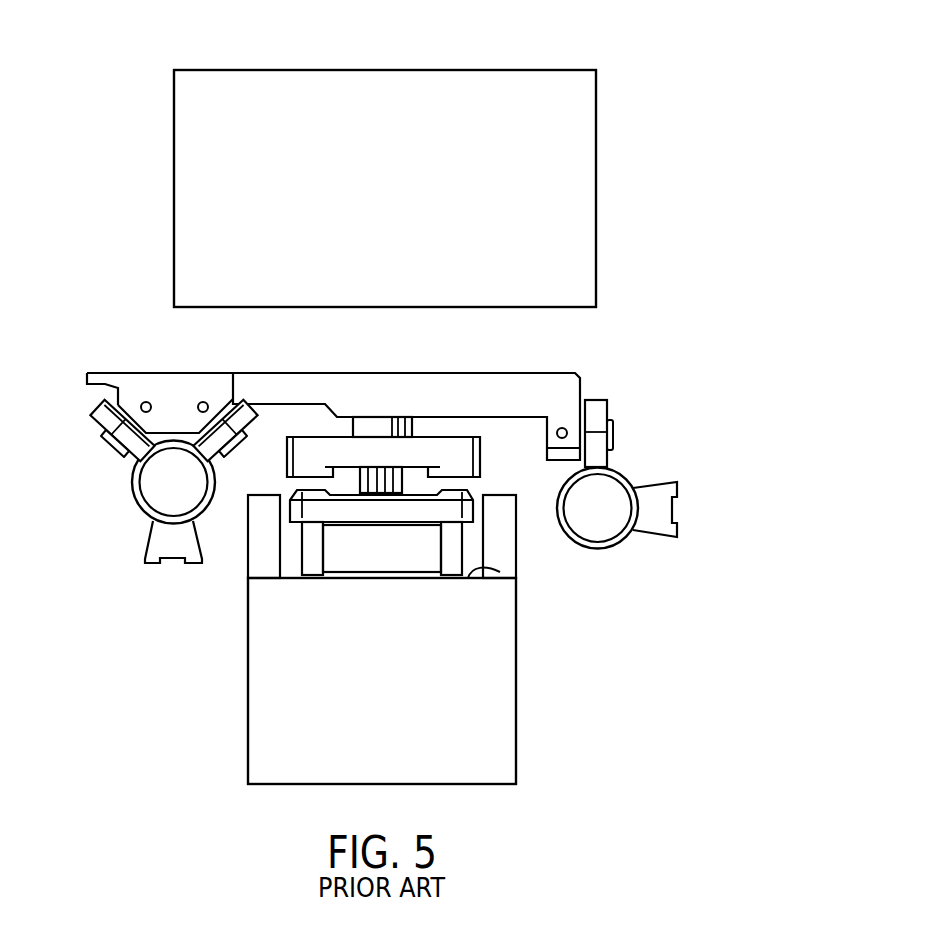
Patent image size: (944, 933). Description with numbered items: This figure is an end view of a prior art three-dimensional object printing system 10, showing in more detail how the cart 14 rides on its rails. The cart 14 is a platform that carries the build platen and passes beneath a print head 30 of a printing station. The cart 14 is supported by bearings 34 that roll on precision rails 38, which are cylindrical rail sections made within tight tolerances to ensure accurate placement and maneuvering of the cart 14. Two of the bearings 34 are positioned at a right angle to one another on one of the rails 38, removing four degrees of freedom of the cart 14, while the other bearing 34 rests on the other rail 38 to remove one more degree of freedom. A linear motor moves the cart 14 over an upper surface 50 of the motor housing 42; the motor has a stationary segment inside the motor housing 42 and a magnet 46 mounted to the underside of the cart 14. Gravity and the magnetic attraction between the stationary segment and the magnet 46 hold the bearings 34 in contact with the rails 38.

The three-dimensional object printing system 10 is at (714, 311).
The cart 14 is at (563, 387).
The print head 30 is at (582, 195).
The bearing 34 is at (233, 420).
The precision rail 38 is at (135, 500).
The motor housing 42 is at (497, 688).
The magnet 46 is at (415, 553).
The upper surface 50 is at (500, 572).